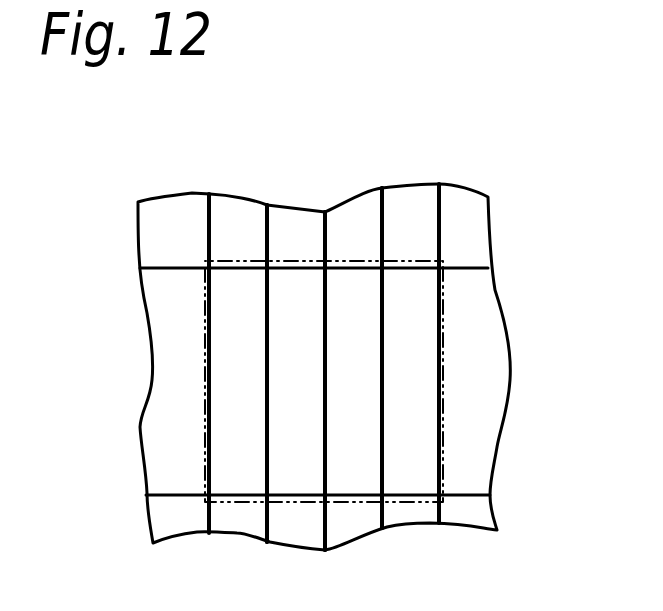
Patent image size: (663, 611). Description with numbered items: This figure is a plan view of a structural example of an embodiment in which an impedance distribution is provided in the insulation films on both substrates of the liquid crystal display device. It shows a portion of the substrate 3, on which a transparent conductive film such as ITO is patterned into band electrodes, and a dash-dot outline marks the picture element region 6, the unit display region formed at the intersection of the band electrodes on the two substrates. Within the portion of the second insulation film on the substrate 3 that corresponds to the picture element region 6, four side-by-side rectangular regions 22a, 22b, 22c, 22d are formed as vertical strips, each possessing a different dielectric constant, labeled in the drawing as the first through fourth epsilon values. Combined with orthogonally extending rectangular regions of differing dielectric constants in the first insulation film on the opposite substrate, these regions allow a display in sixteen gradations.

The substrate 3 is at (167, 398).
The picture element region 6 is at (202, 325).
The rectangular region 22a is at (247, 287).
The rectangular region 22b is at (298, 283).
The rectangular region 22c is at (357, 283).
The rectangular region 22d is at (413, 285).